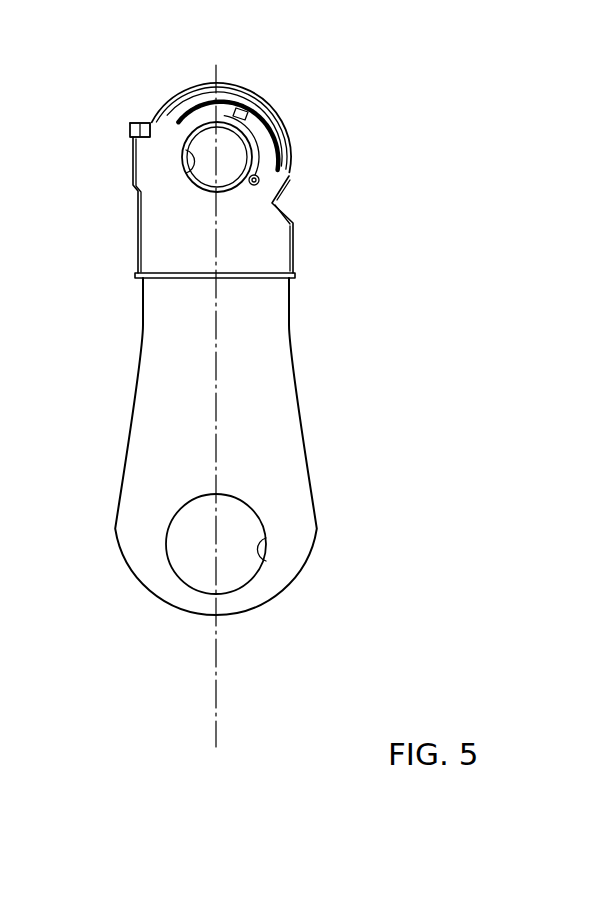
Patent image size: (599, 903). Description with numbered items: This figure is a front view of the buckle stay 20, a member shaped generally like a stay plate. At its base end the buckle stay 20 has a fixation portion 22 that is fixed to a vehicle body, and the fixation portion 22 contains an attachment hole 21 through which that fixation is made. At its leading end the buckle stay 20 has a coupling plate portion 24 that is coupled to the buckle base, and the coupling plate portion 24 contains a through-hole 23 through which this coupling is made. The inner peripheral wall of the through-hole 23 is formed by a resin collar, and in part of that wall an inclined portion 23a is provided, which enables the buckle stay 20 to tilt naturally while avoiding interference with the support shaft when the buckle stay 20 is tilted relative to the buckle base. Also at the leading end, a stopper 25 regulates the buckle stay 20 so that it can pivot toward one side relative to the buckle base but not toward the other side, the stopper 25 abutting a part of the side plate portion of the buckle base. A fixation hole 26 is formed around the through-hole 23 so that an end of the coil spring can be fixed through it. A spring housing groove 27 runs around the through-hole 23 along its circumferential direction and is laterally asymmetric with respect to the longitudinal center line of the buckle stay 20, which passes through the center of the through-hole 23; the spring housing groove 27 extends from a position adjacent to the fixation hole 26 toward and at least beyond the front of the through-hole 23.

The buckle stay 20 is at (302, 380).
The attachment hole 21 is at (265, 561).
The fixation portion 22 is at (298, 523).
The through-hole 23 is at (187, 172).
The inclined portion 23a is at (224, 85).
The coupling plate portion 24 is at (165, 250).
The stopper 25 is at (140, 123).
The fixation hole 26 is at (259, 181).
The spring housing groove 27 is at (253, 117).